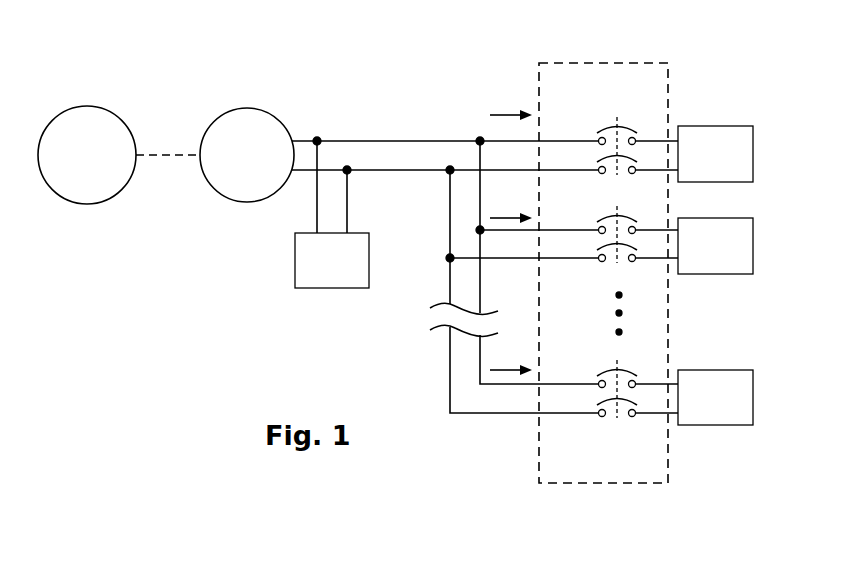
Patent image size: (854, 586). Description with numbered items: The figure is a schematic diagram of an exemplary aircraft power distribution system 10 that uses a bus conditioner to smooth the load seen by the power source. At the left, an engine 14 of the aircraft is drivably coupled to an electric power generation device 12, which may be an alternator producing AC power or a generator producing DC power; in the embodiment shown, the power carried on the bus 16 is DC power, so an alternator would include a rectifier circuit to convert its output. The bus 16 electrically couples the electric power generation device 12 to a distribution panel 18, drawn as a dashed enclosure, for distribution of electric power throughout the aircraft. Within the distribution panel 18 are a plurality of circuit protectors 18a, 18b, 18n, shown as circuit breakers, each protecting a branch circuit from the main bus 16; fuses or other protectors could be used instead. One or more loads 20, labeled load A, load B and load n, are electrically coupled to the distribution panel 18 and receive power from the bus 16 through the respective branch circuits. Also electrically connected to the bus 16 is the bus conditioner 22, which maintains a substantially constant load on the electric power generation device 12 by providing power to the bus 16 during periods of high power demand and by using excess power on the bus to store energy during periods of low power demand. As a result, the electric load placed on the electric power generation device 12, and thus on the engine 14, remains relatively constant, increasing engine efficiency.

The aircraft power distribution system 10 is at (150, 296).
The electric power generation device 12 is at (216, 120).
The engine 14 is at (118, 112).
The bus 16 is at (383, 141).
The distribution panel 18 is at (612, 64).
The circuit protector 18a is at (597, 128).
The circuit protector 18b is at (603, 262).
The circuit protector 18n is at (602, 417).
The loads 20 is at (730, 101).
The bus conditioner 22 is at (295, 283).